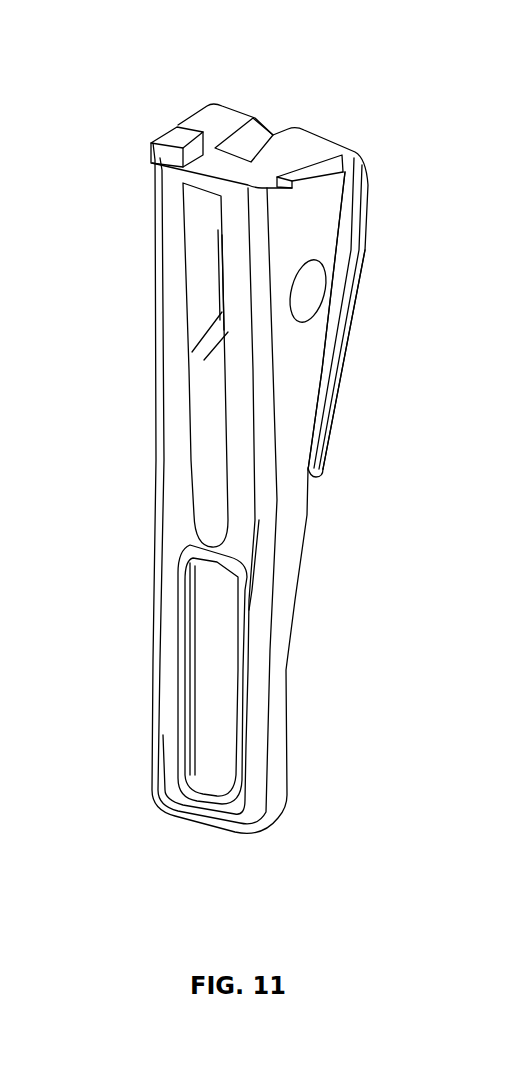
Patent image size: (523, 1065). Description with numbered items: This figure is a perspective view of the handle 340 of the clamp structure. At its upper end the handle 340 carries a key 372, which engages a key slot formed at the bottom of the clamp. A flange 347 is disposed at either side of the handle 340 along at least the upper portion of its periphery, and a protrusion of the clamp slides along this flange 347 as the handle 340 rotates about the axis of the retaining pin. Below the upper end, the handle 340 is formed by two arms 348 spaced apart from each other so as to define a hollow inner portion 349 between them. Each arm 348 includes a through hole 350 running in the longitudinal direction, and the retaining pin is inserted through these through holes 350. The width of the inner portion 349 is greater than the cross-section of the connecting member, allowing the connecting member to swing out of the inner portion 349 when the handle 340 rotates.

The handle 340 is at (309, 504).
The flange 347 is at (323, 240).
The arm 348 is at (237, 352).
The hollow inner portion 349 is at (207, 415).
The through hole 350 is at (312, 293).
The key 372 is at (177, 147).